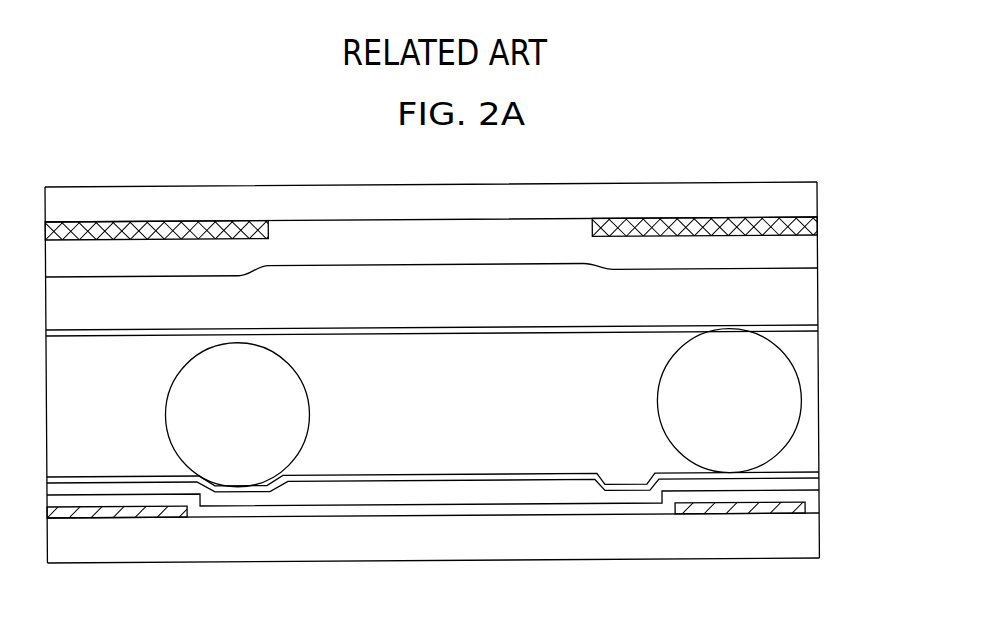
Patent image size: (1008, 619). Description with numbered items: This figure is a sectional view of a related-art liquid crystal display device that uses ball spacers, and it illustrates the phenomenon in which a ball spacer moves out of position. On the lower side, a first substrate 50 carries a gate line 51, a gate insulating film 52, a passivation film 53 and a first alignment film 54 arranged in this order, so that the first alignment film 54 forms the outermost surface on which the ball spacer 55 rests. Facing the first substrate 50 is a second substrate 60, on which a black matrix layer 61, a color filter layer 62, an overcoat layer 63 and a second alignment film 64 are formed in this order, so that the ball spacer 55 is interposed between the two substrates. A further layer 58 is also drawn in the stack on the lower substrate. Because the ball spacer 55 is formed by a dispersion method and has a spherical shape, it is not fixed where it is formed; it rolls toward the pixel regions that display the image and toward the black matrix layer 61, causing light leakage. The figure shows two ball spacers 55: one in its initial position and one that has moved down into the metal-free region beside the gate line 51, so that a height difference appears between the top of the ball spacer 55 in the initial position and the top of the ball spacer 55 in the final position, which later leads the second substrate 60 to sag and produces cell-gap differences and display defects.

The first substrate 50 is at (817, 548).
The gate line 51 is at (800, 515).
The gate insulating film 52 is at (812, 504).
The passivation film 53 is at (812, 486).
The first alignment film 54 is at (808, 475).
The ball spacer 55 is at (297, 404).
The insulating layer 58 is at (447, 490).
The second substrate 60 is at (810, 202).
The black matrix layer 61 is at (810, 229).
The color filter layer 62 is at (810, 255).
The overcoat layer 63 is at (810, 297).
The second alignment film 64 is at (810, 330).